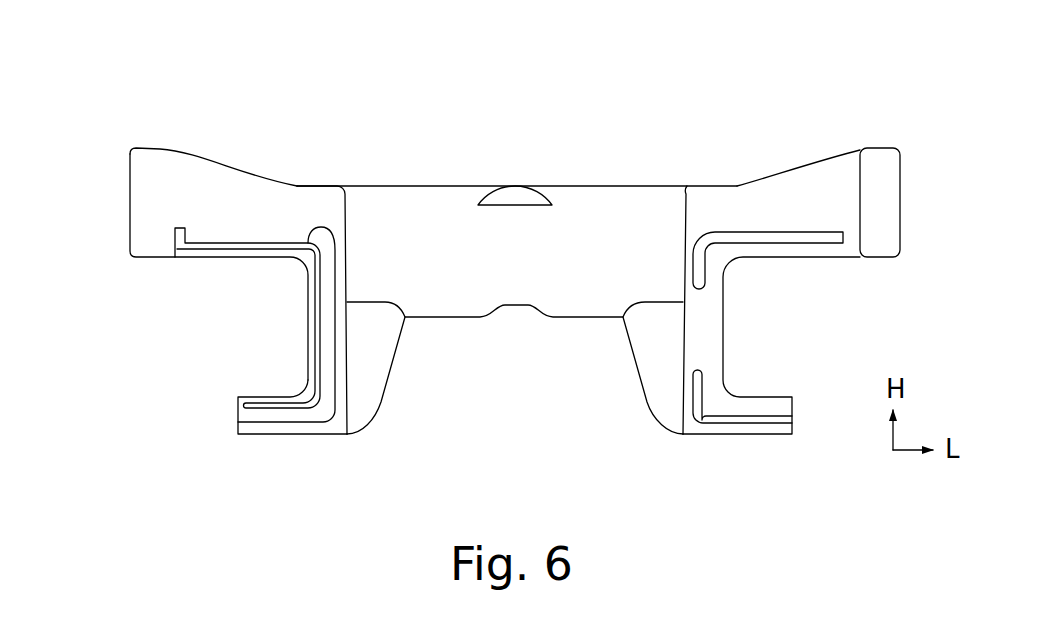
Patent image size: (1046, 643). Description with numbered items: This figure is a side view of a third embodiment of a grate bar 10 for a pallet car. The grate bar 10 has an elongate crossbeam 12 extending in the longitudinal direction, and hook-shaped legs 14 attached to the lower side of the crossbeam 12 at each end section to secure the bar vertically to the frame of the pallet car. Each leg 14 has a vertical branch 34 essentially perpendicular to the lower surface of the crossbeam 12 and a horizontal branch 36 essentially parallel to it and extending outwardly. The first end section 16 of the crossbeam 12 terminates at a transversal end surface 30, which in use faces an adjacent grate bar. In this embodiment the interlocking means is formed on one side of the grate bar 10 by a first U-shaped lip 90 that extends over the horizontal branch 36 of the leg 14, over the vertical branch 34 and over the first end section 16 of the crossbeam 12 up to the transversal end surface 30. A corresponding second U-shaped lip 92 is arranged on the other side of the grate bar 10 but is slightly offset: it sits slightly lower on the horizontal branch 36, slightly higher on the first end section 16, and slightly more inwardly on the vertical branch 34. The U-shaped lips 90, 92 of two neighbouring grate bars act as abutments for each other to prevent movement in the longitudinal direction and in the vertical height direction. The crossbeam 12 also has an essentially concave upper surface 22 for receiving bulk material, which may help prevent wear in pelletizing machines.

The grate bar 10 is at (676, 127).
The crossbeam 12 is at (403, 200).
The legs 14 is at (413, 355).
The first end section 16 is at (252, 156).
The upper surface 22 is at (762, 176).
The transversal end surface 30 is at (143, 217).
The vertical branch 34 is at (344, 387).
The horizontal branch 36 is at (297, 434).
The first U-shaped lip 90 is at (314, 316).
The second U-shaped lip 92 is at (708, 377).